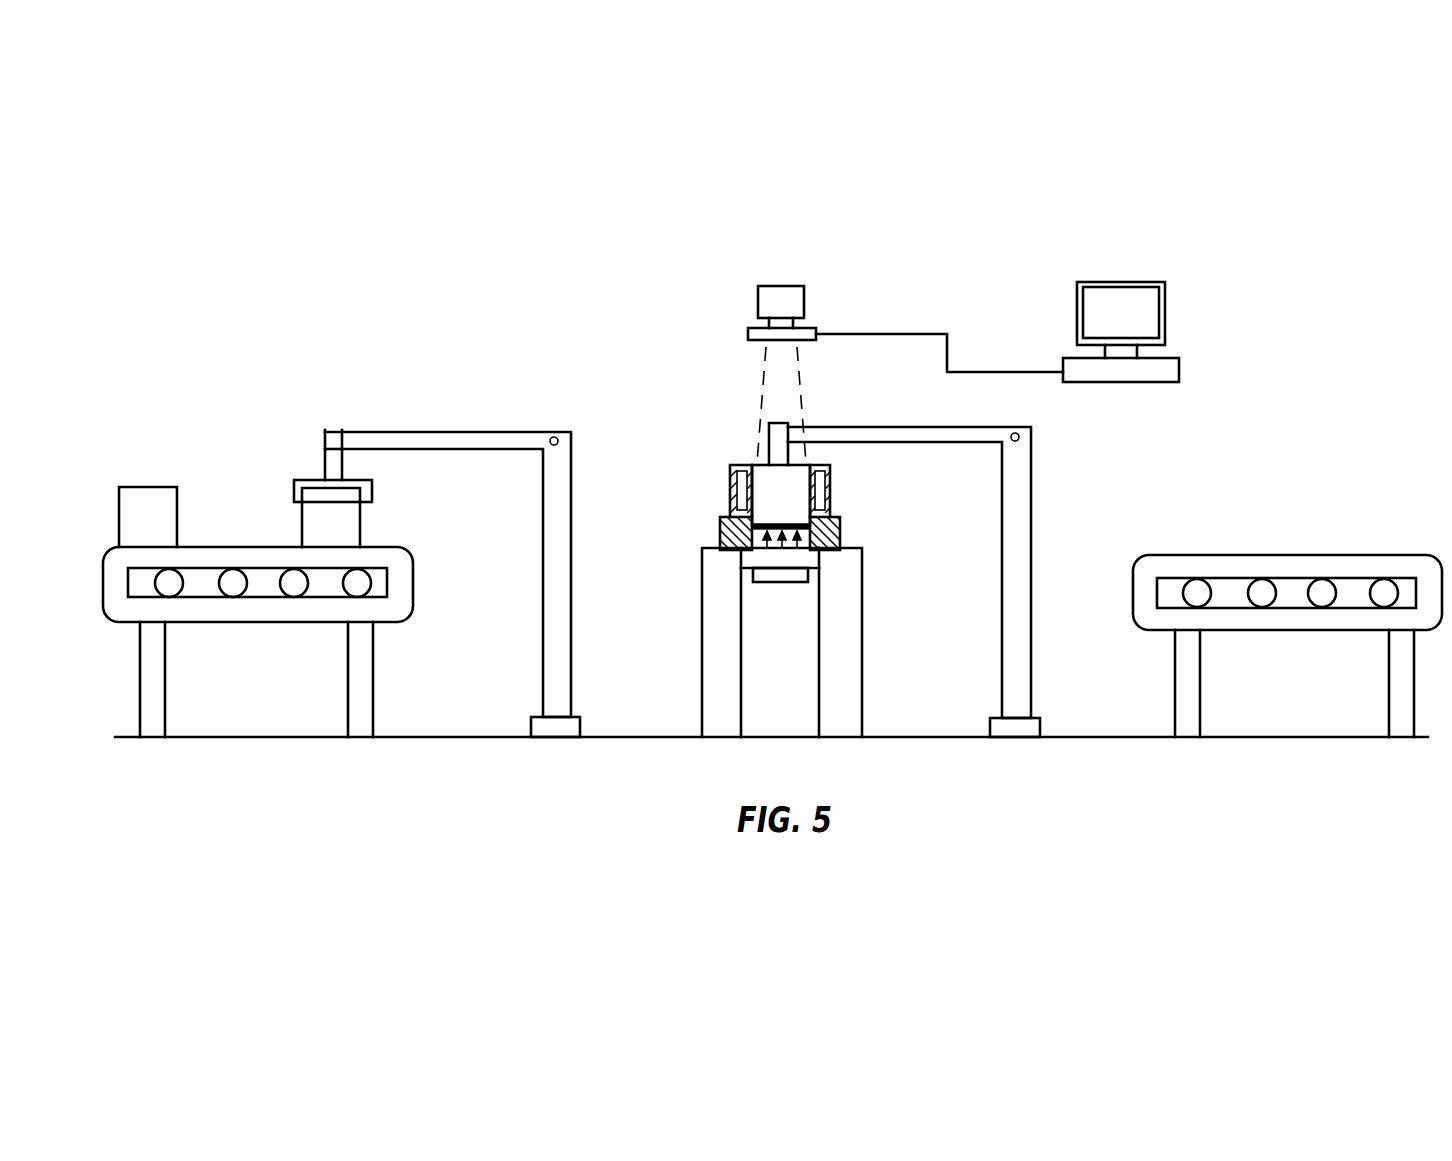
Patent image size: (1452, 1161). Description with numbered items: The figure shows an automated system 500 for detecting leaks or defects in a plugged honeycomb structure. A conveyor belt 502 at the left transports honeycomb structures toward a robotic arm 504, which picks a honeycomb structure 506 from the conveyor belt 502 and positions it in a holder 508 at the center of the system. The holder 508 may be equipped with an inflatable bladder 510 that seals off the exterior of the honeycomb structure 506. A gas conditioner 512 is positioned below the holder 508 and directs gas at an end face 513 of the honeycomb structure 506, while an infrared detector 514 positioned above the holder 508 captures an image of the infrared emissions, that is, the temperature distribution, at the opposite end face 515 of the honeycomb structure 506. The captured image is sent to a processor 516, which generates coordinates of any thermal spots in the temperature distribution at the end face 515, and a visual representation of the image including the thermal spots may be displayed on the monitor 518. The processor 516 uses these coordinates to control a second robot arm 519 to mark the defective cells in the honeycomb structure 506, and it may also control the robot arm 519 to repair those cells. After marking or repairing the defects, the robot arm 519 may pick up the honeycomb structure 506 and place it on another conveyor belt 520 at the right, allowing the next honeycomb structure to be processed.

The automated system 500 is at (621, 367).
The conveyor belt 502 is at (238, 546).
The robotic arm 504 is at (448, 430).
The honeycomb structure 506 is at (316, 497).
The holder 508 is at (728, 540).
The inflatable bladder 510 is at (730, 477).
The gas conditioner 512 is at (787, 575).
The end face 513 is at (810, 527).
The infrared detector 514 is at (781, 298).
The end face 515 is at (758, 465).
The processor 516 is at (1128, 378).
The monitor 518 is at (1121, 283).
The robot arm 519 is at (891, 425).
The conveyor belt 520 is at (1262, 552).